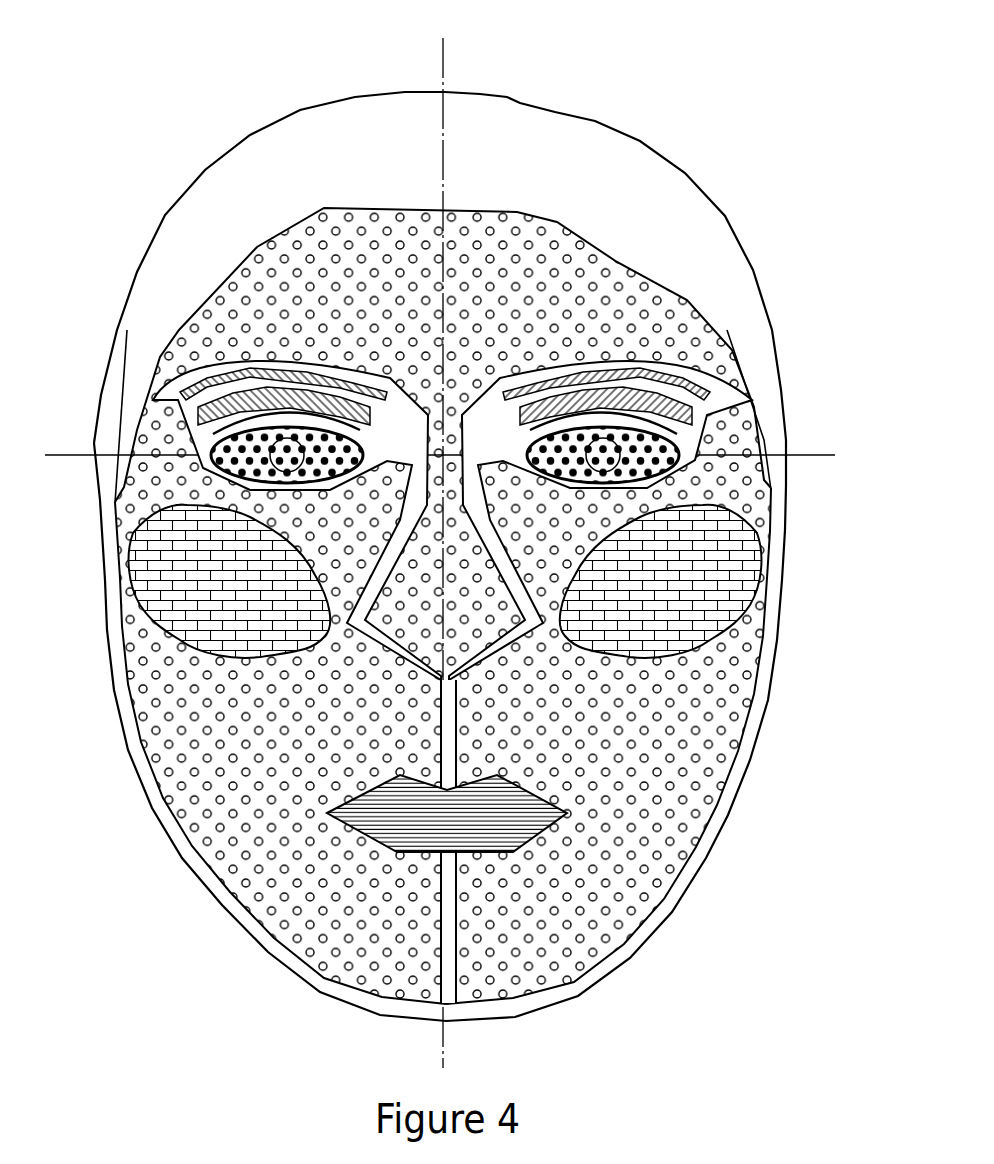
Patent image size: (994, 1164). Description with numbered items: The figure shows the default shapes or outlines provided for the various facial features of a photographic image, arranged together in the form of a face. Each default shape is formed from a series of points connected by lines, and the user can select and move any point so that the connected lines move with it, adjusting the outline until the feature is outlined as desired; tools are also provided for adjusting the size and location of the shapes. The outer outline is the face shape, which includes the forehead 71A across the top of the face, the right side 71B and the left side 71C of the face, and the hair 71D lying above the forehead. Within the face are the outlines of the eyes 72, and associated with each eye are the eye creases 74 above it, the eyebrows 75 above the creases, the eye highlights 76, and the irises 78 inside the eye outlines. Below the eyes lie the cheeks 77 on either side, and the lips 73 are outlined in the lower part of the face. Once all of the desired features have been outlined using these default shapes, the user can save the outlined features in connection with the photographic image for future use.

The forehead 71A is at (645, 322).
The right side of the face 71B is at (186, 752).
The left side of the face 71C is at (727, 718).
The hair 71D is at (645, 215).
The eyes 72 is at (203, 470).
The lips 73 is at (525, 820).
The eye creases 74 is at (600, 405).
The eyebrows 75 is at (197, 392).
The eye highlights 76 is at (265, 403).
The cheeks 77 is at (177, 588).
The irises 78 is at (680, 427).